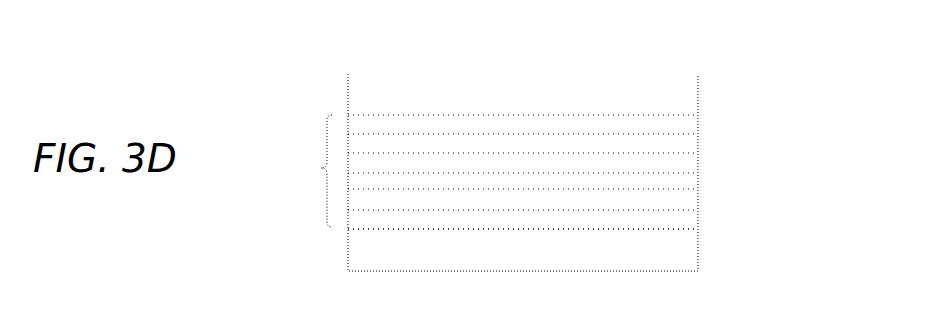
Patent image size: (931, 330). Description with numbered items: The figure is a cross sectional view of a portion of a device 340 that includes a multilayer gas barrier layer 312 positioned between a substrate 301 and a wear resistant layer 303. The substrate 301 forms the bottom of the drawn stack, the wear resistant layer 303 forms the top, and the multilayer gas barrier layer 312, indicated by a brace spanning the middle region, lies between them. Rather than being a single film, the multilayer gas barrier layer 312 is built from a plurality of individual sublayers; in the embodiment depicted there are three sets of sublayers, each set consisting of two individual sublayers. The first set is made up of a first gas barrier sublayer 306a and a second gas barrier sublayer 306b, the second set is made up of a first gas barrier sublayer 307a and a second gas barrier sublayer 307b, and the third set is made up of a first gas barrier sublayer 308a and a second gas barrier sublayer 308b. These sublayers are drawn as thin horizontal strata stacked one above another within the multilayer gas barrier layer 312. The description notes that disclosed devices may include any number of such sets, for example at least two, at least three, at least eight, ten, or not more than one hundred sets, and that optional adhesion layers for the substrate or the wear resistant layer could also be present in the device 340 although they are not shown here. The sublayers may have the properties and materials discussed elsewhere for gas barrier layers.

The device 340 is at (246, 136).
The wear resistant layer 303 is at (523, 99).
The substrate 301 is at (523, 245).
The multilayer gas barrier layer 312 is at (305, 171).
The second gas barrier sublayer 306b is at (685, 123).
The first gas barrier sublayer 306a is at (688, 144).
The second gas barrier sublayer 307b is at (683, 165).
The first gas barrier sublayer 307a is at (685, 182).
The second gas barrier sublayer 308b is at (684, 194).
The first gas barrier sublayer 308a is at (684, 217).